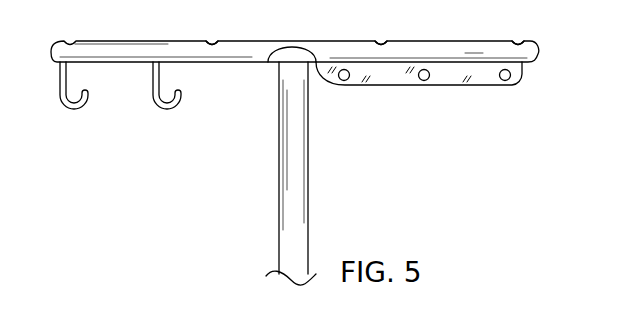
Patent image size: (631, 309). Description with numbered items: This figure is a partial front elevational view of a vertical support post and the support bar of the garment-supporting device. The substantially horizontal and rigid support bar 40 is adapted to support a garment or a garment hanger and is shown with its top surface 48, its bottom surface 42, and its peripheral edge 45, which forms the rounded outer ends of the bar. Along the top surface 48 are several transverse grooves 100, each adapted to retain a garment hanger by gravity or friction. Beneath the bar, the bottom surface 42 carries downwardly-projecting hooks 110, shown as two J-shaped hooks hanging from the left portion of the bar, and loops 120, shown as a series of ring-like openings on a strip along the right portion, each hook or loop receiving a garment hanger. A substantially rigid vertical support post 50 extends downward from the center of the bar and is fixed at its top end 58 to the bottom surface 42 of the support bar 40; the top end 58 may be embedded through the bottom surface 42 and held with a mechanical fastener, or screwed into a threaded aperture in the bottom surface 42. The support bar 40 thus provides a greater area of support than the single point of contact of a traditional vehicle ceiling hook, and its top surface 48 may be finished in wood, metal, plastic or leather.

The support bar 40 is at (292, 91).
The bottom surface 42 is at (252, 68).
The peripheral edge 45 is at (534, 46).
The top surface 48 is at (452, 42).
The vertical support post 50 is at (287, 220).
The top end 58 is at (293, 82).
The transverse grooves 100 is at (212, 40).
The downwardly-projecting hooks 110 is at (62, 97).
The loops 120 is at (348, 79).